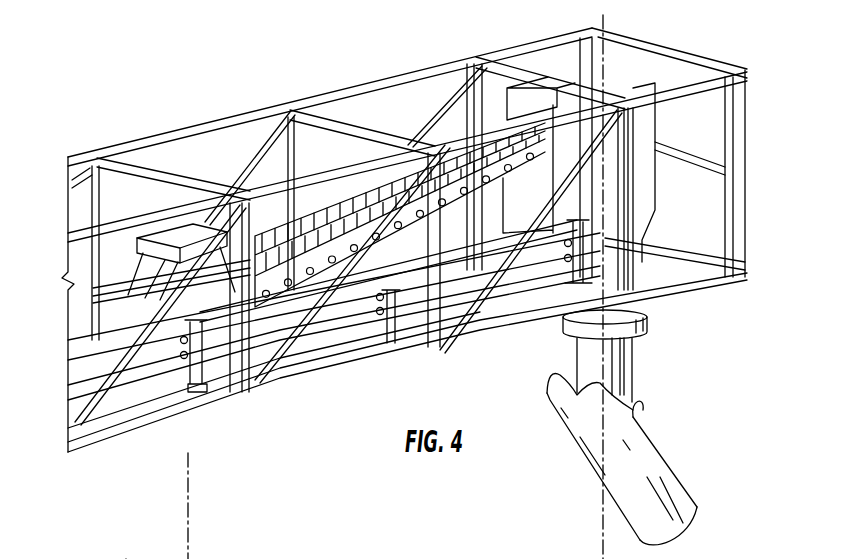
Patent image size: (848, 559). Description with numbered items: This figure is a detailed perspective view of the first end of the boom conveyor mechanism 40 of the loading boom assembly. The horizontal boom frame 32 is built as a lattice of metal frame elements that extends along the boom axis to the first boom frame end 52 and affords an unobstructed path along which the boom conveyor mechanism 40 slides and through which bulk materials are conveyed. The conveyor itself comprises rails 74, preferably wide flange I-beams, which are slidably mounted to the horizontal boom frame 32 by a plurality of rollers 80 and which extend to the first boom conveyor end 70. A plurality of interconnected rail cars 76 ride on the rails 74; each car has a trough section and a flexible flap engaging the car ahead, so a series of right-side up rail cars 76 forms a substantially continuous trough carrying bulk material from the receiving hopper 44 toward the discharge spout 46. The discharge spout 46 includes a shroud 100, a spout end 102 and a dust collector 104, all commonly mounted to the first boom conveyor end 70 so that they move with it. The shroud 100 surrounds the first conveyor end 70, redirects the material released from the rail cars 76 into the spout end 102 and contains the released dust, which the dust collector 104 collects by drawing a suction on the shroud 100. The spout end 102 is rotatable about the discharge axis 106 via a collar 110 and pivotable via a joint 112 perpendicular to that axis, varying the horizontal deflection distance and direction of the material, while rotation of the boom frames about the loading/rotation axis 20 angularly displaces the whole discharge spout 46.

The loading/rotation axis 20 is at (192, 517).
The horizontal boom frame 32 is at (118, 122).
The boom conveyor mechanism 40 is at (310, 357).
The receiving hopper 44 is at (126, 558).
The discharge spout 46 is at (669, 427).
The first boom frame end 52 is at (650, 44).
The first boom conveyor end 70 is at (553, 247).
The rails 74 is at (78, 340).
The rail cars 76 is at (378, 183).
The rollers 80 is at (200, 378).
The shroud 100 is at (643, 143).
The spout end 102 is at (660, 484).
The dust collector 104 is at (180, 243).
The discharge axis 106 is at (602, 517).
The collar 110 is at (640, 327).
The joint 112 is at (640, 402).